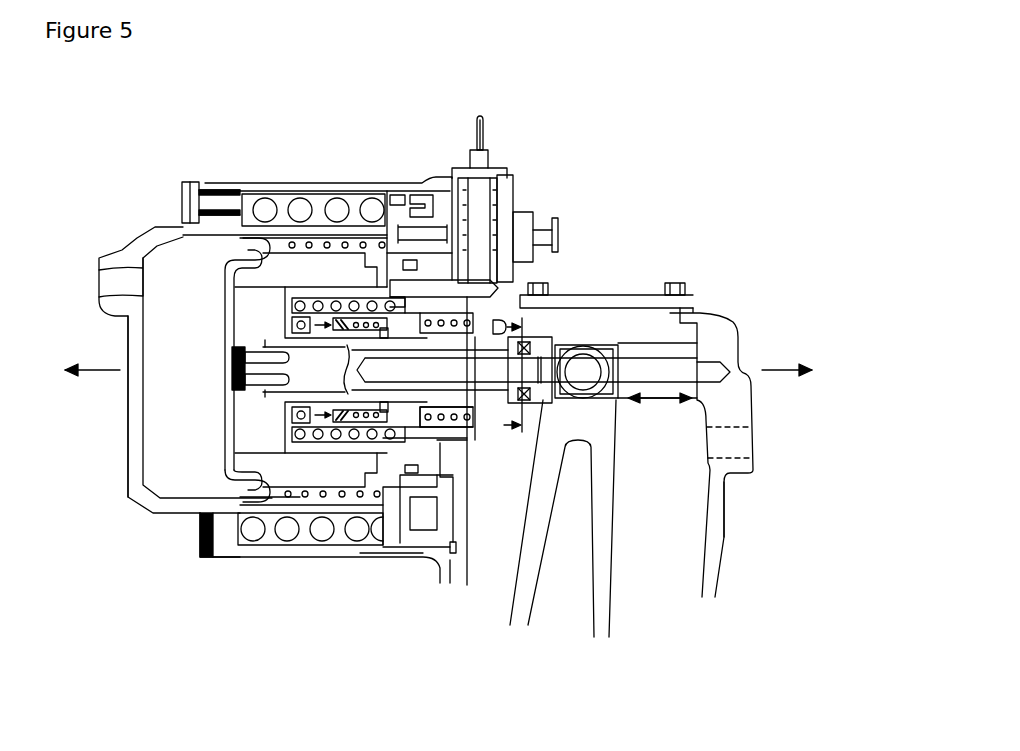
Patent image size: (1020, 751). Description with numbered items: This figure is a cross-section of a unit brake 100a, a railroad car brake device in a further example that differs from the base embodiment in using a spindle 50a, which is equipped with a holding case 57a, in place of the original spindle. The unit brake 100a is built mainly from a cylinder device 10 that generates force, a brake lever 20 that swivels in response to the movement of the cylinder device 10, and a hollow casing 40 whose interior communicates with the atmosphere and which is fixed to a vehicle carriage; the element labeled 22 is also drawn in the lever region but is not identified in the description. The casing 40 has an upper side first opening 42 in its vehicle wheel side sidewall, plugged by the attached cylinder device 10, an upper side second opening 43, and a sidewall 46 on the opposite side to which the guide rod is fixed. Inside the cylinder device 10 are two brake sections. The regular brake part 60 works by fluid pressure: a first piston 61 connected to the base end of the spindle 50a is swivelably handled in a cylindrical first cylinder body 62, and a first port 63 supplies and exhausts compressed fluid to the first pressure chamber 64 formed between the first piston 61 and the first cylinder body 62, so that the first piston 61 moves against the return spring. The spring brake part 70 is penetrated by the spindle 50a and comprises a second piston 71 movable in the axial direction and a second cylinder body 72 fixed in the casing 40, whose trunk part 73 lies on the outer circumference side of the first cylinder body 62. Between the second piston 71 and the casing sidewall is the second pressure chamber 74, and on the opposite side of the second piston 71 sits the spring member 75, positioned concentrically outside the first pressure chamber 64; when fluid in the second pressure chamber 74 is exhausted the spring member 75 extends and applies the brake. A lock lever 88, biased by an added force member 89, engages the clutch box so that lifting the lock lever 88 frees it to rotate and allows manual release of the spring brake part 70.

The cylinder device 10 is at (549, 145).
The brake lever 20 is at (622, 590).
The arm portion 22 is at (597, 528).
The casing 40 is at (725, 290).
The upper side first opening 42 is at (450, 410).
The upper side second opening 43 is at (652, 310).
The sidewall on the opposite side 46 is at (725, 510).
The spindle 50a is at (497, 288).
The holding case 57a is at (537, 337).
The regular brake part 60 is at (133, 232).
The first piston 61 is at (233, 413).
The first cylinder body 62 is at (170, 508).
The first port 63 is at (97, 278).
The first pressure chamber 64 is at (185, 272).
The spring brake part 70 is at (383, 181).
The second piston 71 is at (367, 273).
The second cylinder body 72 is at (262, 190).
The trunk part 73 is at (208, 183).
The second pressure chamber 74 is at (422, 503).
The spring member 75 is at (340, 205).
The lock lever 88 is at (484, 137).
The added force member 89 is at (497, 218).
The unit brake 100a is at (760, 57).